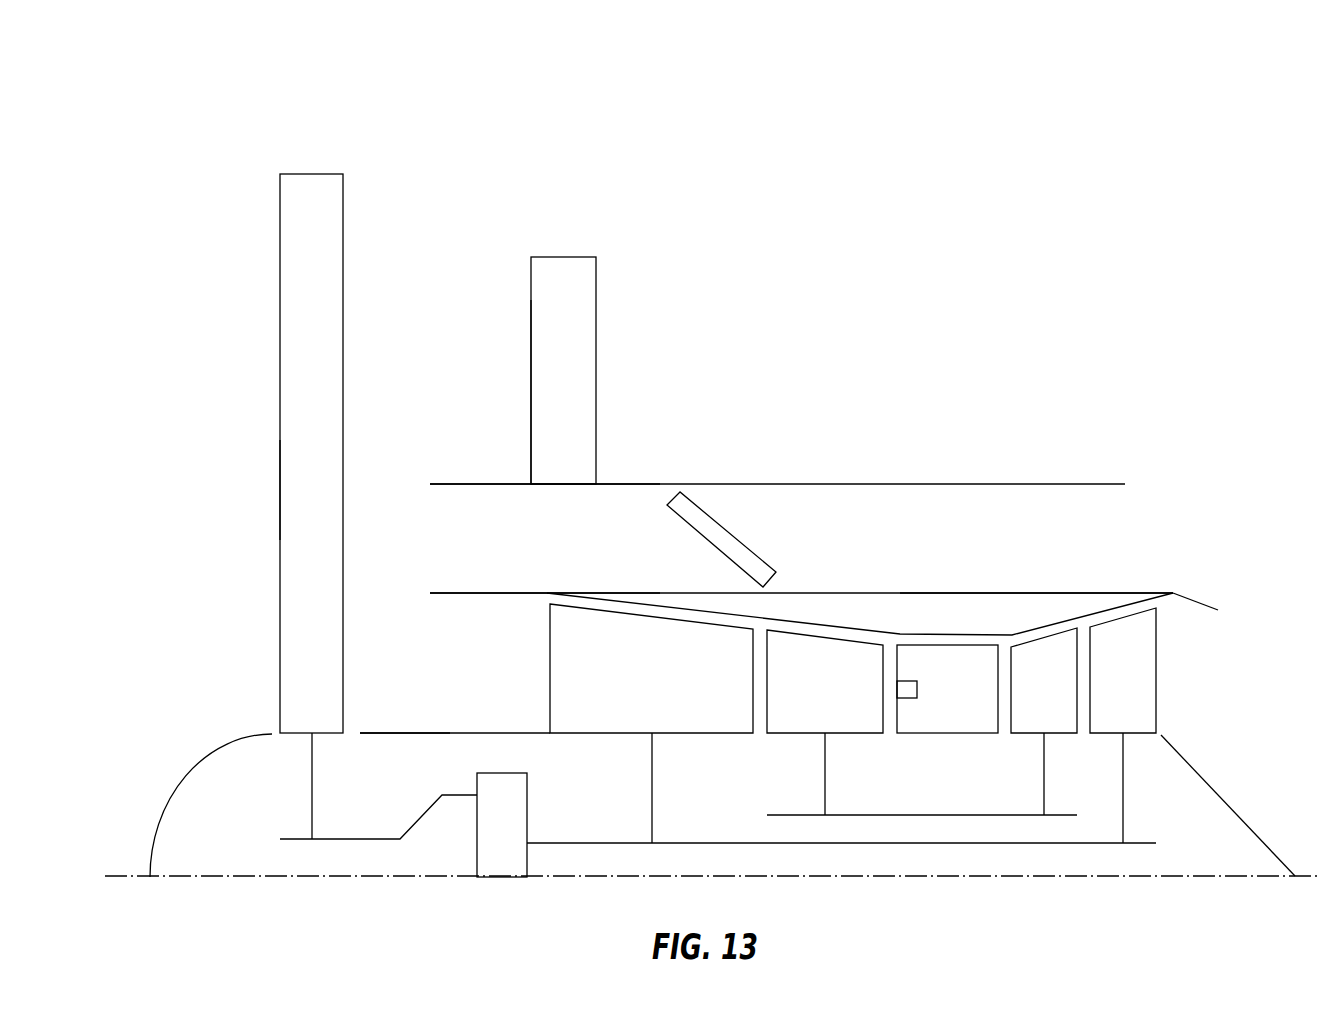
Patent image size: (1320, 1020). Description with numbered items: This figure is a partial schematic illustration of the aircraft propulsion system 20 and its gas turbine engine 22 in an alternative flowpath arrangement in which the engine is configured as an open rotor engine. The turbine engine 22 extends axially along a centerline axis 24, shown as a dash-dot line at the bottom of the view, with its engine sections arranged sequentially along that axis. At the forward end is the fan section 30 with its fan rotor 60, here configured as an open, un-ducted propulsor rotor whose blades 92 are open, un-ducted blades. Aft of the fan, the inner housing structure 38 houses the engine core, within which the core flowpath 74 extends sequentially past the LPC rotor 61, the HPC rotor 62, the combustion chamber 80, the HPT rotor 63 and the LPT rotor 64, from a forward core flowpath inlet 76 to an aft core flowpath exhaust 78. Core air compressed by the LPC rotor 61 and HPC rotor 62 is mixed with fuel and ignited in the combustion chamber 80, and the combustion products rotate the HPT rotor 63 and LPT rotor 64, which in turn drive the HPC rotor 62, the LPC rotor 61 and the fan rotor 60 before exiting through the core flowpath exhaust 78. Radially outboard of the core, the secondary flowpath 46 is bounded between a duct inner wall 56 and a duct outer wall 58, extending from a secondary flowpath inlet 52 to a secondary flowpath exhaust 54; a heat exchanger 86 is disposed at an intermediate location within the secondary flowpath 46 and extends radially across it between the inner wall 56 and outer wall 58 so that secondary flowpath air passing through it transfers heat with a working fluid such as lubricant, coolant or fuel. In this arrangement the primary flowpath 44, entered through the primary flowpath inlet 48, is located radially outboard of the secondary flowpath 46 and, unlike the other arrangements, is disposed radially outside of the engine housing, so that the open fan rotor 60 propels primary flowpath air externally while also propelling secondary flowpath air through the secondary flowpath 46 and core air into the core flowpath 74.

The propulsion system 20 is at (103, 90).
The gas turbine engine 22 is at (712, 509).
The centerline axis 24 is at (271, 878).
The fan section 30 is at (318, 162).
The inner housing structure 38 is at (1134, 459).
The primary flowpath 44 is at (476, 371).
The secondary flowpath 46 is at (476, 550).
The primary flowpath inlet 48 is at (418, 374).
The secondary flowpath inlet 52 is at (418, 546).
The secondary flowpath exhaust 54 is at (1133, 507).
The duct inner wall 56 is at (852, 581).
The duct outer wall 58 is at (852, 487).
The fan rotor 60 is at (298, 705).
The LPC rotor 61 is at (639, 703).
The HPC rotor 62 is at (813, 703).
The HPT rotor 63 is at (1033, 703).
The LPT rotor 64 is at (1111, 703).
The core flowpath 74 is at (488, 681).
The core flowpath inlet 76 is at (418, 659).
The core flowpath exhaust 78 is at (1215, 688).
The combustion chamber 80 is at (935, 703).
The heat exchanger 86 is at (735, 535).
The blades 92 is at (280, 497).